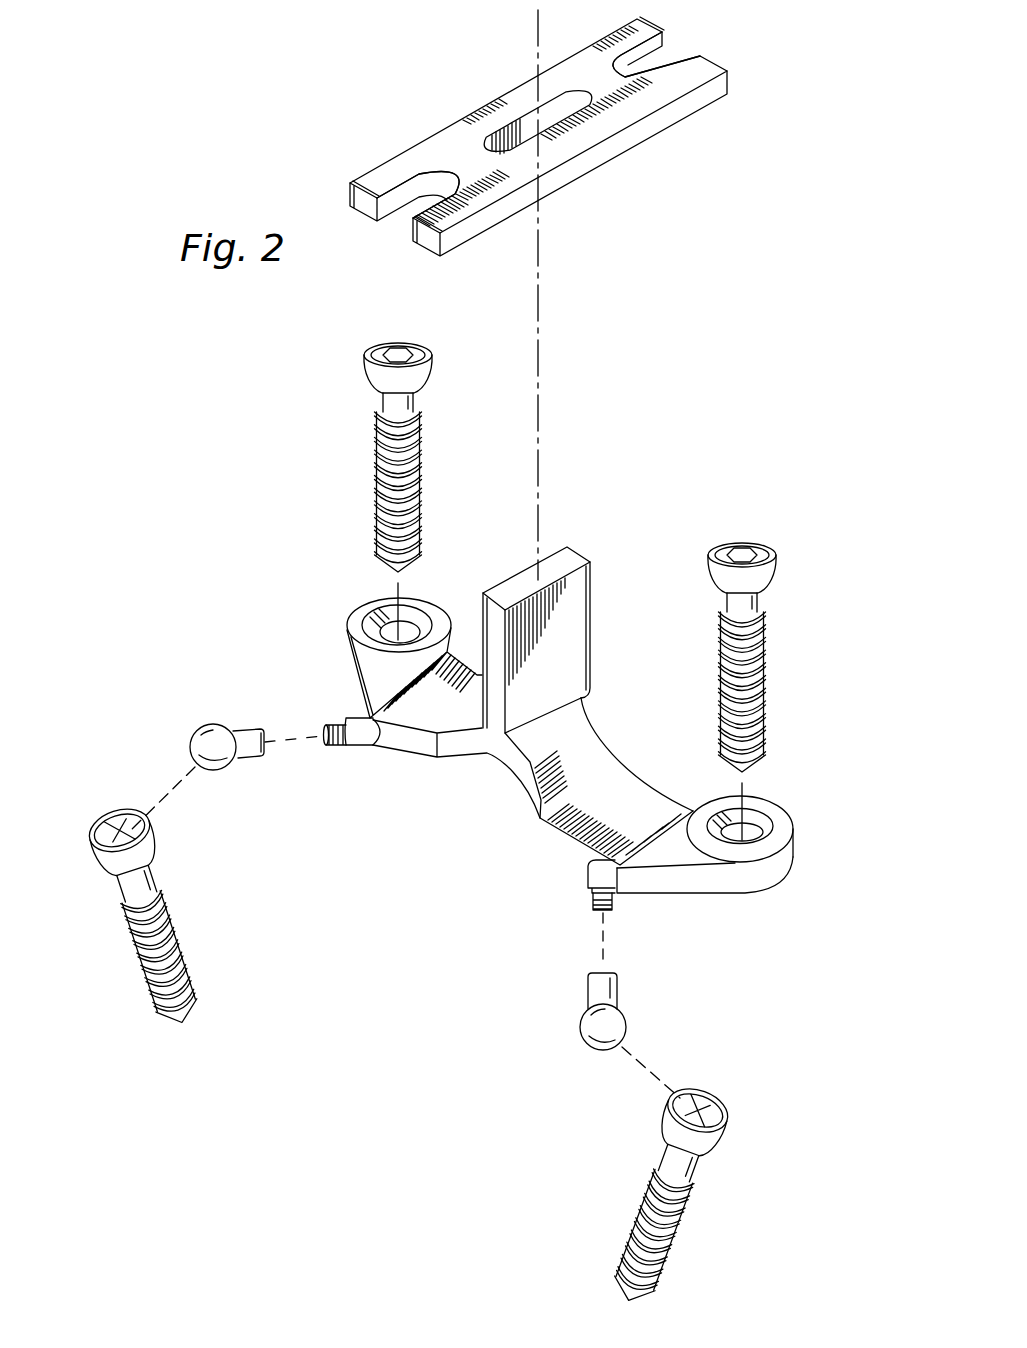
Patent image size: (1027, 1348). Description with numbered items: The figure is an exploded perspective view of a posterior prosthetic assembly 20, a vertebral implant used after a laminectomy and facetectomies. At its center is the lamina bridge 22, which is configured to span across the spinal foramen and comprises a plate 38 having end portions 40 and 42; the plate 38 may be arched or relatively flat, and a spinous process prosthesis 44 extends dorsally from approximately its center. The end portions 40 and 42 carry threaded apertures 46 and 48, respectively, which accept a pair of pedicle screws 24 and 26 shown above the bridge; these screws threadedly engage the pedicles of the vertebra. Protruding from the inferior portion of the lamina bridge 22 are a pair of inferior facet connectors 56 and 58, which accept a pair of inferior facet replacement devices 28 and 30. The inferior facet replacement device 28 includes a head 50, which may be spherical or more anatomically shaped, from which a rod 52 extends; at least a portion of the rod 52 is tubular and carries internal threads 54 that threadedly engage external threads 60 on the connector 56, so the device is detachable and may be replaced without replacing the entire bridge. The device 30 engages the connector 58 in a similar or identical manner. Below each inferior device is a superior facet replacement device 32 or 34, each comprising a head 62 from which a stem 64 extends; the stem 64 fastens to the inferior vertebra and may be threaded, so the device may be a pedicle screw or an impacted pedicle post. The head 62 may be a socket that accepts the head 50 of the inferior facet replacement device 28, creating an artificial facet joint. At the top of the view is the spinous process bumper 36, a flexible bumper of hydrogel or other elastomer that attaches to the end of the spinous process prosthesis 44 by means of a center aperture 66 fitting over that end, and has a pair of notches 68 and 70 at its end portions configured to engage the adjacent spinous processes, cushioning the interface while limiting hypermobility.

The posterior prosthetic assembly 20 is at (225, 538).
The lamina bridge 22 is at (633, 735).
The pedicle screw 24 is at (378, 347).
The pedicle screw 26 is at (762, 556).
The inferior facet replacement device 28 is at (190, 753).
The inferior facet replacement device 30 is at (627, 1024).
The superior facet replacement device 32 is at (148, 833).
The superior facet replacement device 34 is at (667, 1112).
The spinous process bumper 36 is at (712, 62).
The plate 38 is at (547, 768).
The end portion 40 is at (363, 608).
The end portion 42 is at (768, 817).
The spinous process prosthesis 44 is at (582, 610).
The threaded aperture 46 is at (420, 607).
The threaded aperture 48 is at (770, 821).
The head 50 is at (197, 729).
The rod 52 is at (240, 730).
The internal threads 54 is at (265, 757).
The inferior facet connector 56 is at (335, 746).
The inferior facet connector 58 is at (614, 905).
The external threads 60 is at (333, 728).
The head 62 is at (95, 818).
The stem 64 is at (125, 903).
The center aperture 66 is at (522, 127).
The notch 68 is at (662, 52).
The notch 70 is at (445, 184).